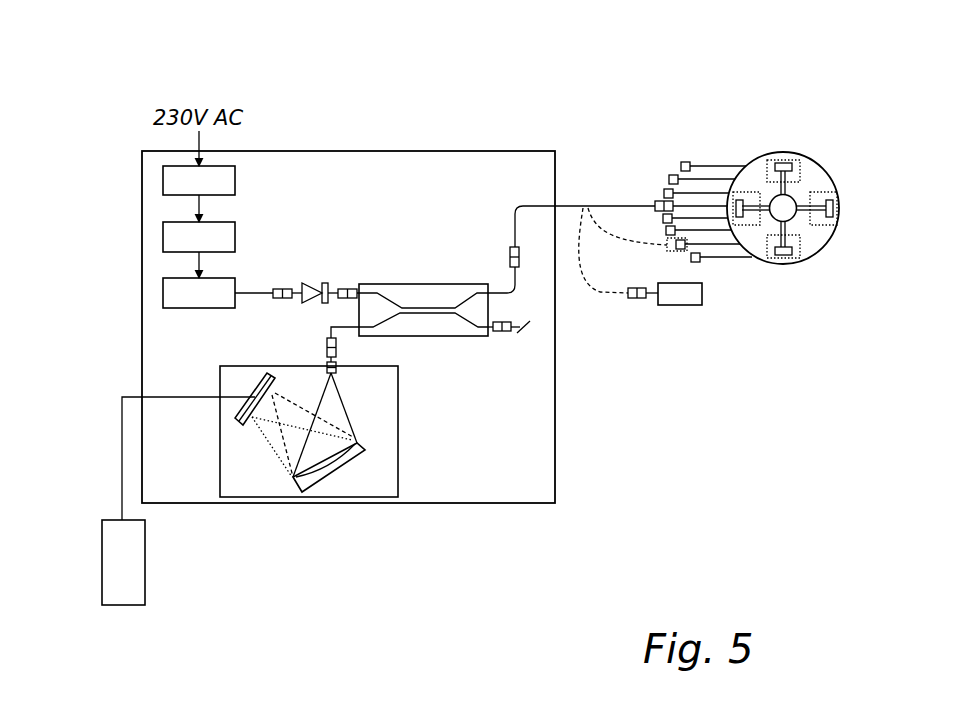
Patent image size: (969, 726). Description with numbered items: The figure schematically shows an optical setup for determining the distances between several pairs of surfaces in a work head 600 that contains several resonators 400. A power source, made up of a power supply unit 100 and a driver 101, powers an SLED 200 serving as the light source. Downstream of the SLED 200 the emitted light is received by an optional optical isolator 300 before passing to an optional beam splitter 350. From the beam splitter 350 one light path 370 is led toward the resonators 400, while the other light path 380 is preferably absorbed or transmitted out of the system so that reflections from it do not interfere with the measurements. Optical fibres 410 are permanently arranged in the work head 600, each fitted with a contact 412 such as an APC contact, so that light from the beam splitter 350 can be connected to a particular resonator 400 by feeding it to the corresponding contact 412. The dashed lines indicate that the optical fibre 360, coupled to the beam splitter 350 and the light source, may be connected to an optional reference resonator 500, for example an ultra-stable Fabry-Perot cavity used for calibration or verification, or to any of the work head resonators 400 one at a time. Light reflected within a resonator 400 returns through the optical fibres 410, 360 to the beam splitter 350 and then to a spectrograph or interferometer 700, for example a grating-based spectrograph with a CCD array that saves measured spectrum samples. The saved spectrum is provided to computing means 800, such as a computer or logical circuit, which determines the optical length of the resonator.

The power supply unit 100 is at (163, 181).
The driver 101 is at (163, 237).
The SLED 200 is at (163, 293).
The optical isolator 300 is at (317, 275).
The beam splitter 350 is at (423, 292).
The optical fibre 360 is at (538, 203).
The light path 370 is at (503, 290).
The second light path 380 is at (472, 337).
The resonators 400 is at (824, 192).
The optical fibres 410 is at (723, 167).
The contact 412 is at (684, 163).
The reference resonator 500 is at (675, 305).
The work head 600 is at (730, 98).
The spectrograph or interferometer 700 is at (362, 488).
The computing means 800 is at (130, 572).